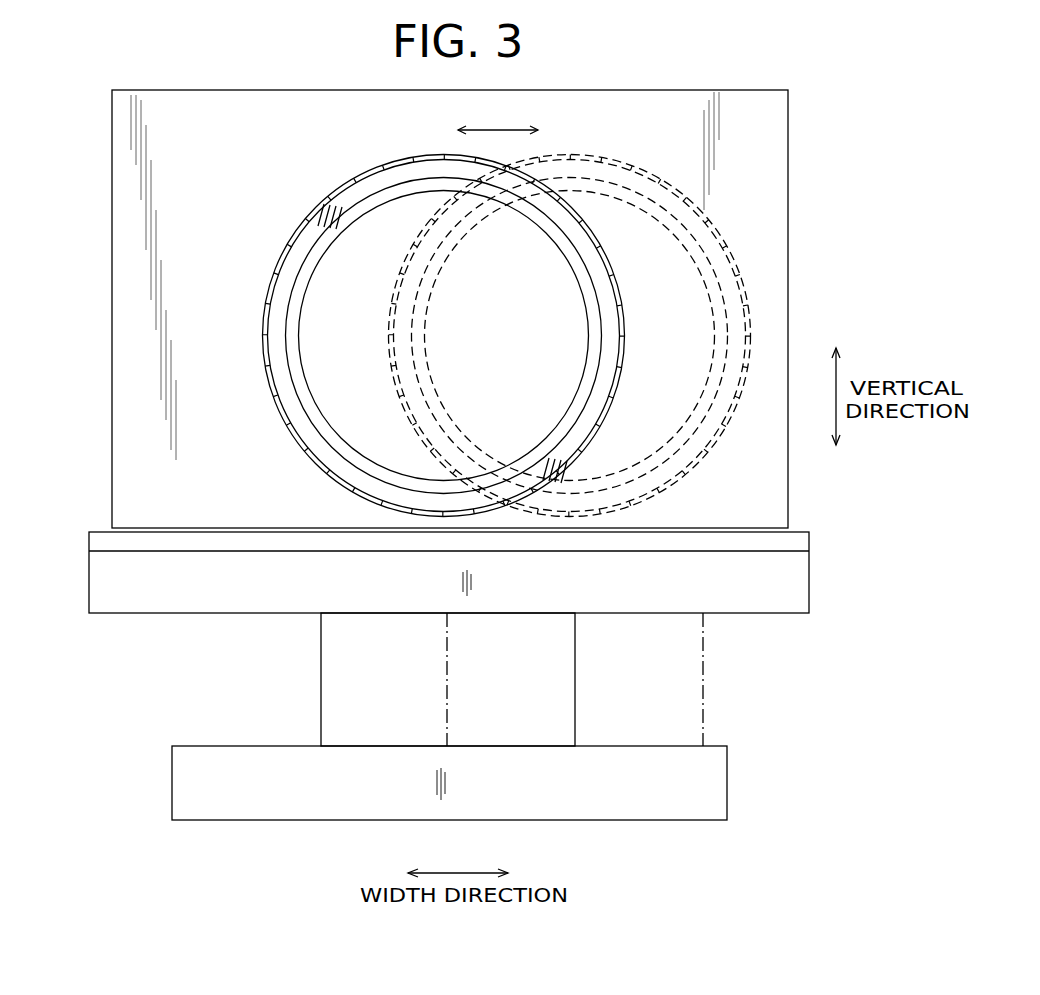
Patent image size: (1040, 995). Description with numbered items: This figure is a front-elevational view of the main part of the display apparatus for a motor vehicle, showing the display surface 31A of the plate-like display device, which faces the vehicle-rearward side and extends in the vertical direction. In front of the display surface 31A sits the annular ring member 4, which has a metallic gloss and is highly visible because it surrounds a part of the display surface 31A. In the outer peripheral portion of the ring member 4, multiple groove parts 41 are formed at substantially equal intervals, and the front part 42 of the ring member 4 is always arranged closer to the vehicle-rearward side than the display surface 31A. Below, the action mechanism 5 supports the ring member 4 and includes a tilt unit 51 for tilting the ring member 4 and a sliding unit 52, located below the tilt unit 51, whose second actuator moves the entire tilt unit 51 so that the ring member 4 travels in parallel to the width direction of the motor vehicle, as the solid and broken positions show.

The display surface 31A is at (748, 158).
The ring member 4 is at (517, 336).
The groove parts 41 is at (296, 237).
The front part 42 is at (296, 362).
The action mechanism 5 is at (449, 701).
The tilt unit 51 is at (338, 652).
The sliding unit 52 is at (277, 806).